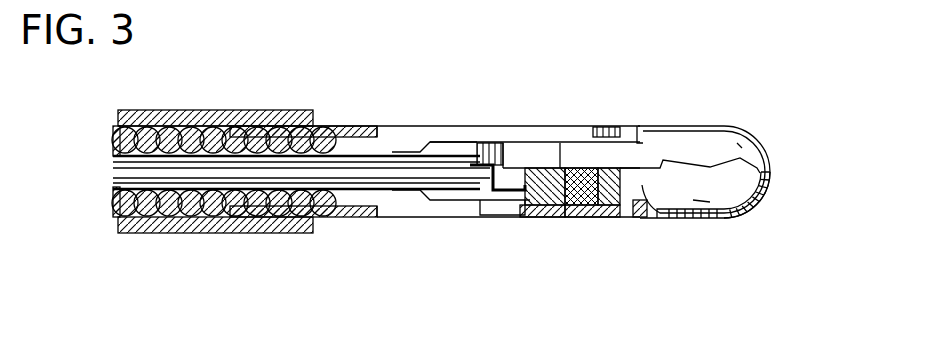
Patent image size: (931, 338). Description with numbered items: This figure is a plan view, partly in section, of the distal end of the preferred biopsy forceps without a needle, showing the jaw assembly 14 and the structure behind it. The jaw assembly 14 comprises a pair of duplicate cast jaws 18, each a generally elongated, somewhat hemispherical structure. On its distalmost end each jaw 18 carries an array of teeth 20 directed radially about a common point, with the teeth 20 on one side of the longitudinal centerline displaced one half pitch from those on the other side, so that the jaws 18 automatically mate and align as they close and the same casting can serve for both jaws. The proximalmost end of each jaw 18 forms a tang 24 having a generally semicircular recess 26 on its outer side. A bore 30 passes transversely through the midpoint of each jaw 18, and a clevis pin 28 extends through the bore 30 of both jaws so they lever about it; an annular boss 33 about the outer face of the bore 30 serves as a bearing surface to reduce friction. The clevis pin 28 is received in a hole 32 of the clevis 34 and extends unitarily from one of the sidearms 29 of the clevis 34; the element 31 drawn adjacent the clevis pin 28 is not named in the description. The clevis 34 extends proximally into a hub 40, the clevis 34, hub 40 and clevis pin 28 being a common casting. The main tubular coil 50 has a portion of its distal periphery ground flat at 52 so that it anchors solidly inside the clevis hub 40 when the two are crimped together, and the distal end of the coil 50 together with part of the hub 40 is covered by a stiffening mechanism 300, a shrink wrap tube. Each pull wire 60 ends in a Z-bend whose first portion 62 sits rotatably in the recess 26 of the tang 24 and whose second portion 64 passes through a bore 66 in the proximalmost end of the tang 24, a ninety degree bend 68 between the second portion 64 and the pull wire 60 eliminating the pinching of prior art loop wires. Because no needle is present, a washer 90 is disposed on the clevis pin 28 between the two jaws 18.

The jaw assembly 14 is at (673, 104).
The jaw 18 is at (762, 142).
The teeth 20 is at (750, 213).
The tang 24 is at (522, 141).
The recess 26 is at (485, 210).
The clevis pin 28 is at (573, 217).
The sidearm 29 is at (586, 133).
The bore 30 is at (557, 213).
The spacer 31 is at (618, 220).
The hole 32 is at (572, 220).
The annular boss 33 is at (553, 140).
The clevis 34 is at (533, 213).
The hub 40 is at (255, 214).
The main tubular coil 50 is at (163, 128).
The ground flat portion 52 is at (228, 128).
The pull wire 60 is at (352, 172).
The first portion 62 is at (503, 202).
The second portion 64 is at (508, 140).
The bore 66 is at (447, 140).
The ninety degree bend 68 is at (498, 140).
The washer 90 is at (640, 136).
The stiffening mechanism 300 is at (163, 228).